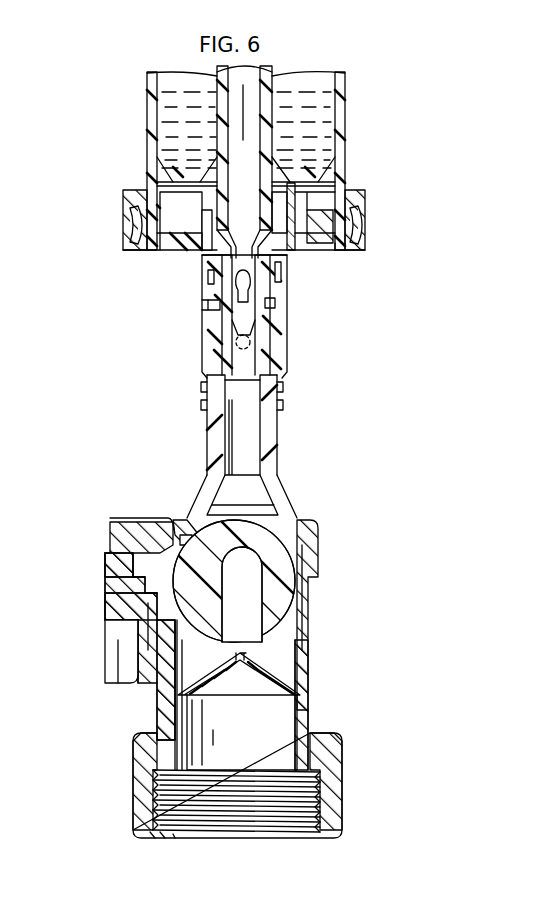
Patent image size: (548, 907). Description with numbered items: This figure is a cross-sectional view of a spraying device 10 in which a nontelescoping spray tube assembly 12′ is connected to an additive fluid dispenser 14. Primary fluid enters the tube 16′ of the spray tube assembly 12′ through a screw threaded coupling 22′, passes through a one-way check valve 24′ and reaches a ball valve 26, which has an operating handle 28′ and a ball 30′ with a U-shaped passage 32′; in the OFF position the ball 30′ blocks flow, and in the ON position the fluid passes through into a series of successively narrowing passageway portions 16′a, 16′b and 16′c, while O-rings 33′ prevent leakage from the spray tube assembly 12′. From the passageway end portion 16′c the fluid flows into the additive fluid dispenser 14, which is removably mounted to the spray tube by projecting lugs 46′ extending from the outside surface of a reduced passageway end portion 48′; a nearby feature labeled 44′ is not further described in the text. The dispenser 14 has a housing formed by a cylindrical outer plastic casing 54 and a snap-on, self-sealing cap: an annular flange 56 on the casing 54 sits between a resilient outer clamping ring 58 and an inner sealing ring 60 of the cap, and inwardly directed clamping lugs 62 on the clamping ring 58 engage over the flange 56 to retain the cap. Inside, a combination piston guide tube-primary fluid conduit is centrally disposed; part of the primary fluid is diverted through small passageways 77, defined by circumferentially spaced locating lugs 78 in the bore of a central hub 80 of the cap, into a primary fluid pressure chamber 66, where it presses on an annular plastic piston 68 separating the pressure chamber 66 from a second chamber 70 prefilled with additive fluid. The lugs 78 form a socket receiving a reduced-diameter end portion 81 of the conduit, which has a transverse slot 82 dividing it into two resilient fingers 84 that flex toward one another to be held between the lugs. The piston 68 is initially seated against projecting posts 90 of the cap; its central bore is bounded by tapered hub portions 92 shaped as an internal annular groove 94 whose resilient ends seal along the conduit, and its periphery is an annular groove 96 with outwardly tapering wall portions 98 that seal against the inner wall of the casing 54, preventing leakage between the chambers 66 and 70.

The spraying device 10 is at (412, 330).
The nontelescoping spray tube assembly 12′ is at (398, 494).
The additive fluid dispenser 14 is at (412, 152).
The tube 16′ is at (312, 549).
The passageway portion 16′a is at (268, 492).
The passageway portion 16′b is at (250, 432).
The passageway end portion 16′c is at (272, 320).
The screw threaded coupling 22′ is at (340, 806).
The one-way check valve 24′ is at (270, 676).
The ball valve 26 is at (88, 604).
The operating handle 28′ is at (122, 690).
The ball 30′ is at (292, 582).
The U-shaped passage 32′ is at (252, 594).
The O-rings 33′ is at (195, 556).
The port 44′ is at (222, 306).
The projecting lugs 46′ is at (262, 350).
The reduced passageway end portion 48′ is at (262, 332).
The cylindrical outer plastic casing 54 is at (338, 86).
The annular flange 56 is at (140, 222).
The resilient outer clamping ring 58 is at (358, 227).
The inner sealing ring 60 is at (356, 206).
The clamping lugs 62 is at (136, 200).
The primary fluid pressure chamber 66 is at (171, 223).
The annular plastic piston 68 is at (192, 160).
The second chamber 70 is at (205, 92).
The passageways 77 is at (268, 284).
The locating lugs 78 is at (215, 272).
The central hub 80 is at (300, 238).
The reduced end portion 81 is at (283, 272).
The transverse slot 82 is at (195, 152).
The resilient fingers 84 is at (230, 290).
The projecting posts 90 is at (300, 206).
The tapered hub portions 92 is at (200, 132).
The internal annular groove 94 is at (293, 162).
The annular groove 96 is at (165, 176).
The tapering wall portions 98 is at (330, 172).